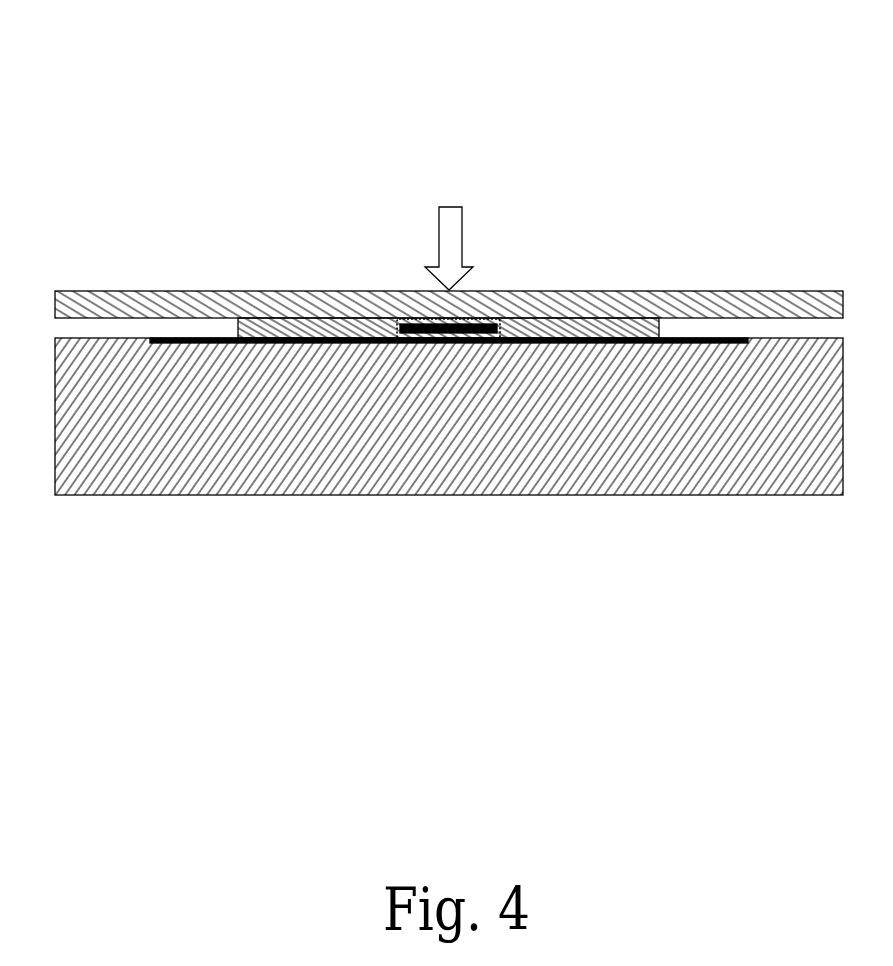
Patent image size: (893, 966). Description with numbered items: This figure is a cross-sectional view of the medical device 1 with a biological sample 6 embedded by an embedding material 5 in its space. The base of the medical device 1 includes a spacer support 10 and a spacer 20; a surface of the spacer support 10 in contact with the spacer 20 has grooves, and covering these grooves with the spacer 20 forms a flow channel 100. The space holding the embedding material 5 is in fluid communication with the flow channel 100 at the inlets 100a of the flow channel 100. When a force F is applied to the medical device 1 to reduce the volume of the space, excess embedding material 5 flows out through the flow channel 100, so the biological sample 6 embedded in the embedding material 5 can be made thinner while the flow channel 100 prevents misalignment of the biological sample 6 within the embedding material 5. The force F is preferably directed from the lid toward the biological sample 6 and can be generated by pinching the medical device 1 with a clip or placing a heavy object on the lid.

The medical device 1 is at (590, 134).
The embedding material 5 is at (480, 319).
The biological sample 6 is at (420, 319).
The spacer support 10 is at (104, 306).
The spacer 20 is at (678, 300).
The flow channel 100 is at (317, 343).
The inlet 100a is at (407, 343).
The force F is at (449, 232).